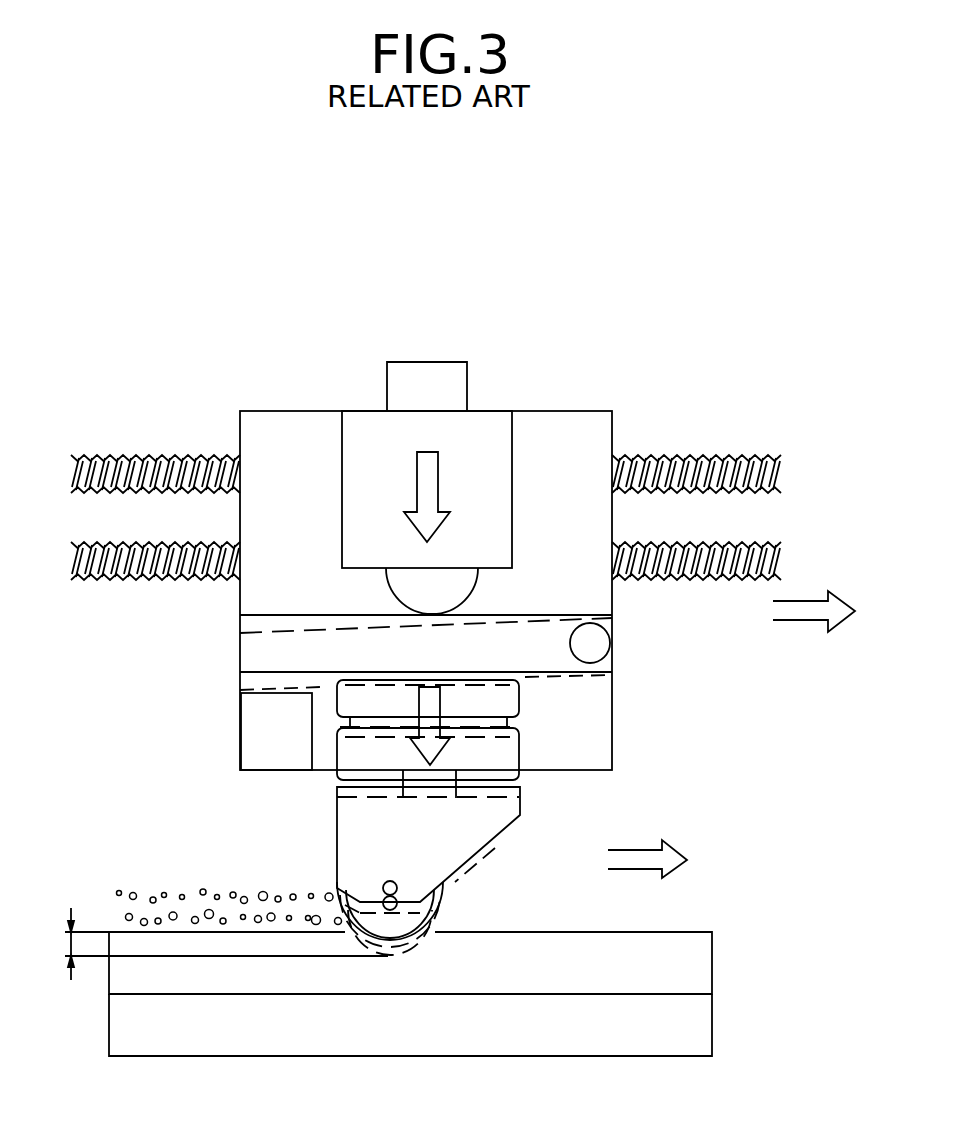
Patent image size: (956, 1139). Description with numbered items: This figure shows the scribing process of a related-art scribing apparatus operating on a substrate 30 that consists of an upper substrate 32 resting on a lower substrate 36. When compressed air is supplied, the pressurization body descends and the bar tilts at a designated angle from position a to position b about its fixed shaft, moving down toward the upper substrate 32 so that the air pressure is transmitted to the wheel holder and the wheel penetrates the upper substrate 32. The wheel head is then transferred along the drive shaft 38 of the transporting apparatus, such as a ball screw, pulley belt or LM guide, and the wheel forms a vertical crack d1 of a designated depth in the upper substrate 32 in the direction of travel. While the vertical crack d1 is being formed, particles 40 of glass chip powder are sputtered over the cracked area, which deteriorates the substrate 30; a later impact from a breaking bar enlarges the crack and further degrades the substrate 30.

The drive shaft 38 is at (780, 473).
The initial bar position a is at (240, 615).
The tilted bar position b is at (240, 632).
The substrate 30 is at (476, 994).
The upper substrate 32 is at (712, 948).
The lower substrate 36 is at (440, 1025).
The particles 40 is at (205, 902).
The vertical crack d1 is at (69, 944).